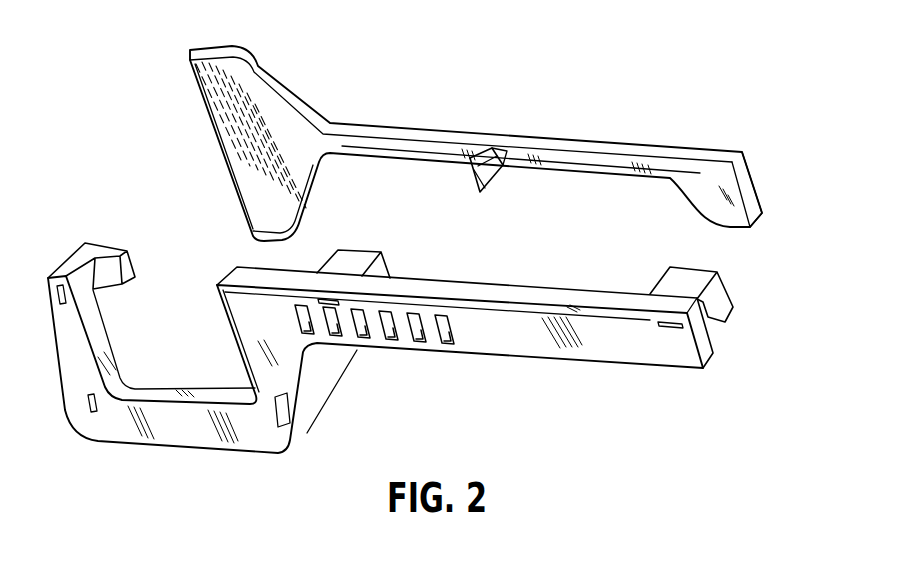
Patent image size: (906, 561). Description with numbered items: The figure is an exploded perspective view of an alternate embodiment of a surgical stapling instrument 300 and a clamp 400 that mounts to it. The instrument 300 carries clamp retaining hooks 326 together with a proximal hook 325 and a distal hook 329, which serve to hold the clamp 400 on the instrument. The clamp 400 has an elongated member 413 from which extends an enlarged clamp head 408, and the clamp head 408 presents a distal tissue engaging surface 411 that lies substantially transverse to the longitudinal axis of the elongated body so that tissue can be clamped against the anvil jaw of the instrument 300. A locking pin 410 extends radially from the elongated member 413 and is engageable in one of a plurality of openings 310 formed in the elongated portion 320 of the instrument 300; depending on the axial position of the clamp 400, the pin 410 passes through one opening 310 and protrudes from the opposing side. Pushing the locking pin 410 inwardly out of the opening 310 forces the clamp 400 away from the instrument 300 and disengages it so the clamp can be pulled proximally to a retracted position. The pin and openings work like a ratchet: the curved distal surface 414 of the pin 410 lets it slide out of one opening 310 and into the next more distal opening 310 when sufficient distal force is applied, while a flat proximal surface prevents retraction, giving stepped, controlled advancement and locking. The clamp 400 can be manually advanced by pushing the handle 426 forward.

The instrument 300 is at (189, 465).
The openings 310 is at (418, 340).
The elongated portion 320 is at (522, 342).
The proximal hook 325 is at (698, 278).
The clamp retaining hooks 326 is at (115, 232).
The distal hook 329 is at (357, 258).
The clamp 400 is at (582, 129).
The clamp head 408 is at (270, 110).
The locking pin 410 is at (485, 183).
The distal tissue engaging surface 411 is at (210, 127).
The elongated member 413 is at (542, 160).
The curved distal surface 414 is at (518, 153).
The handle 426 is at (735, 200).